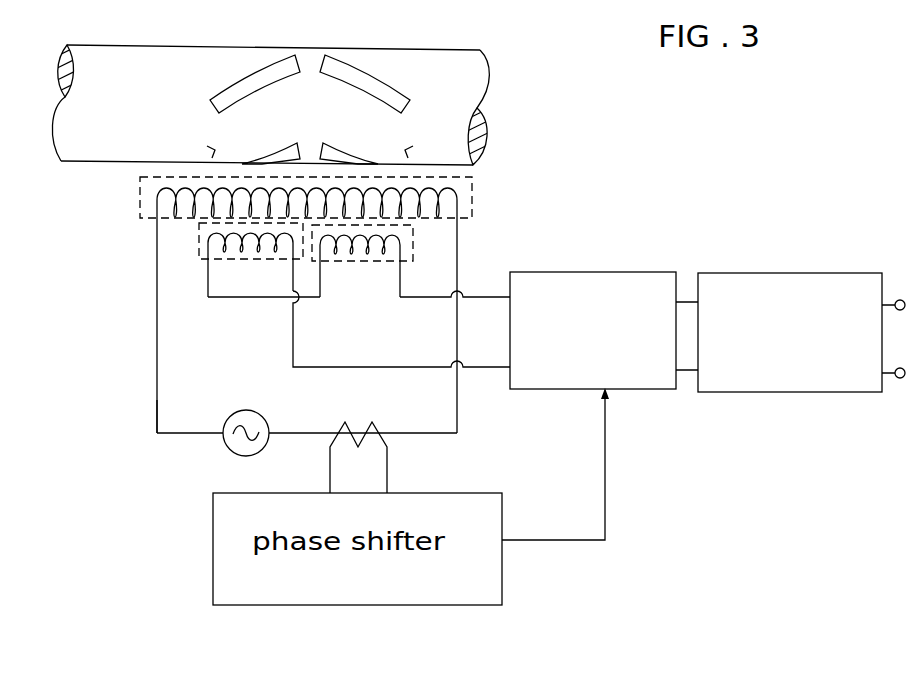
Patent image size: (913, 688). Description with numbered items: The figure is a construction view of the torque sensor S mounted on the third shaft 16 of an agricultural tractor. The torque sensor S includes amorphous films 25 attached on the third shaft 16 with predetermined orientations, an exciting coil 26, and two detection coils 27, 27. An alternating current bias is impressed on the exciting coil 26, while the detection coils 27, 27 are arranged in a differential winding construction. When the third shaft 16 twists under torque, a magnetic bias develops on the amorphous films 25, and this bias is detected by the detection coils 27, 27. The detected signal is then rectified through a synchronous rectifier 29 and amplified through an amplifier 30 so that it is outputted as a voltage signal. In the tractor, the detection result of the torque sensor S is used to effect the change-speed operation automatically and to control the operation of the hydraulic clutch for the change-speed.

The third shaft 16 is at (99, 163).
The amorphous films 25 is at (244, 163).
The exciting coil 26 is at (473, 198).
The detection coils 27 is at (199, 260).
The synchronous rectifier 29 is at (656, 272).
The amplifier 30 is at (810, 273).
The torque sensor S is at (135, 277).